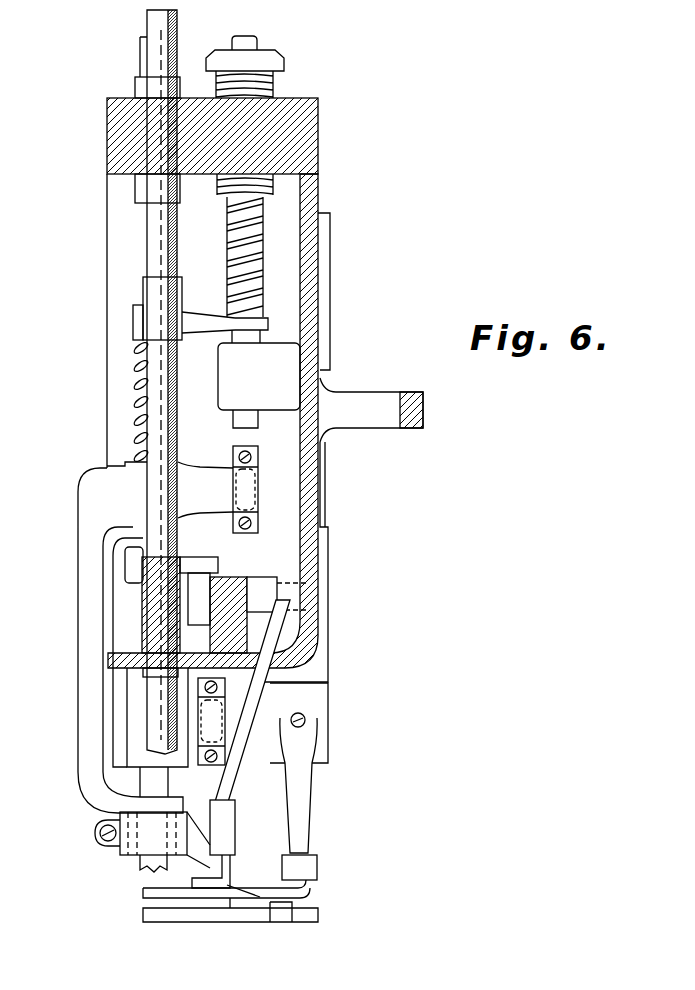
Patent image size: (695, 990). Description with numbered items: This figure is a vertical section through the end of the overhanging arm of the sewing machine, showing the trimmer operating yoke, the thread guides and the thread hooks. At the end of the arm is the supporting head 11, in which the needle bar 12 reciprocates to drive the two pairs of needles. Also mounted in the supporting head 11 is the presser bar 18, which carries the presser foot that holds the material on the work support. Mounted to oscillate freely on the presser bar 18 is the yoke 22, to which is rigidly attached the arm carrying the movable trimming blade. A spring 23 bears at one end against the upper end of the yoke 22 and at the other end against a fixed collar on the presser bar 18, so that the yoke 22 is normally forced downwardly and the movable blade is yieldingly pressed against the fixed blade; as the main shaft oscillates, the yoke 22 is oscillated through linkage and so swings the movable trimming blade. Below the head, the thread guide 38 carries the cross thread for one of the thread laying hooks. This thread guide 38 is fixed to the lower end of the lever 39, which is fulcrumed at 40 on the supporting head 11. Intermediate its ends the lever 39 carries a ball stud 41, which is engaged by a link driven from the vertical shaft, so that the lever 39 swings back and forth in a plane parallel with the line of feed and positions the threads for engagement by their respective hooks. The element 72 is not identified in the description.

The supporting head 11 is at (317, 484).
The needle bar 12 is at (160, 413).
The presser bar 18 is at (147, 257).
The yoke 22 is at (87, 665).
The spring 23 is at (138, 372).
The thread guide 38 is at (217, 873).
The lever 39 is at (233, 767).
The fulcrum 40 is at (258, 597).
The ball stud 41 is at (230, 717).
The clamp 72 is at (212, 720).